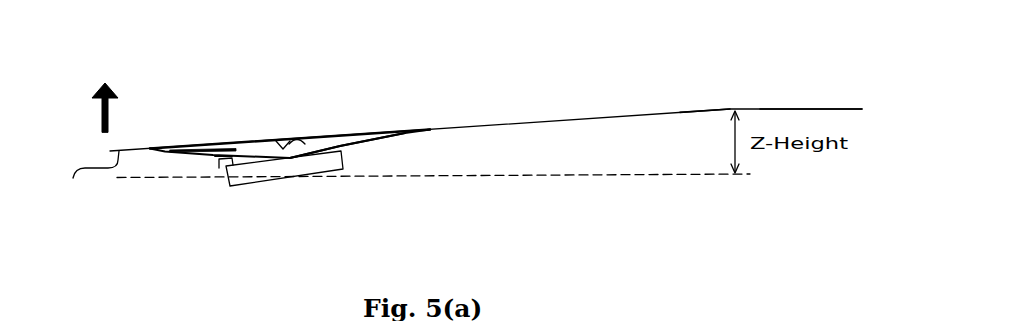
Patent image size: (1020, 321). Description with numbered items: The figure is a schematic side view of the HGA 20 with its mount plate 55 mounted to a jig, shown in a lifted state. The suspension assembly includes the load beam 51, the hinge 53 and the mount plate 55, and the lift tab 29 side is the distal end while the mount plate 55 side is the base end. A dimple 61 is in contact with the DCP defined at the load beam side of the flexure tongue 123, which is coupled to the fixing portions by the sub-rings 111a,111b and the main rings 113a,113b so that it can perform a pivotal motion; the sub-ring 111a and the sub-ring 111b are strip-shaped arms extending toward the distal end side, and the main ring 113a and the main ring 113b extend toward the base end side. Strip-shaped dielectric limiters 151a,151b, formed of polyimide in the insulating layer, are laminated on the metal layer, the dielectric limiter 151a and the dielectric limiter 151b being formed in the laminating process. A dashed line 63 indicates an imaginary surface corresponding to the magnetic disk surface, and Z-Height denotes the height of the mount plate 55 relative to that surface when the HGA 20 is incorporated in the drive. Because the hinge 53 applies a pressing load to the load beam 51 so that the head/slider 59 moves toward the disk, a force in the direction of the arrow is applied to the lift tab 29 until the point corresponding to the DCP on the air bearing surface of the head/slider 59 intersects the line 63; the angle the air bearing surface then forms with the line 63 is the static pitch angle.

The HGA 20 is at (524, 73).
The lift tab 29 is at (92, 177).
The load beam 51 is at (252, 143).
The hinge 53 is at (720, 108).
The mount plate 55 is at (789, 108).
The head/slider 59 is at (302, 178).
The dimple 61 is at (306, 143).
The line 63 is at (532, 176).
The sub-rings 111a,111b is at (379, 172).
The sub-ring 111a is at (379, 172).
The sub-ring 111b is at (365, 143).
The main rings 113a,113b is at (180, 130).
The main ring 113a is at (180, 130).
The main ring 113b is at (228, 144).
The flexure tongue 123 is at (220, 168).
The dielectric limiters 151a,151b is at (166, 190).
The dielectric limiter 151a is at (166, 190).
The dielectric limiter 151b is at (218, 157).